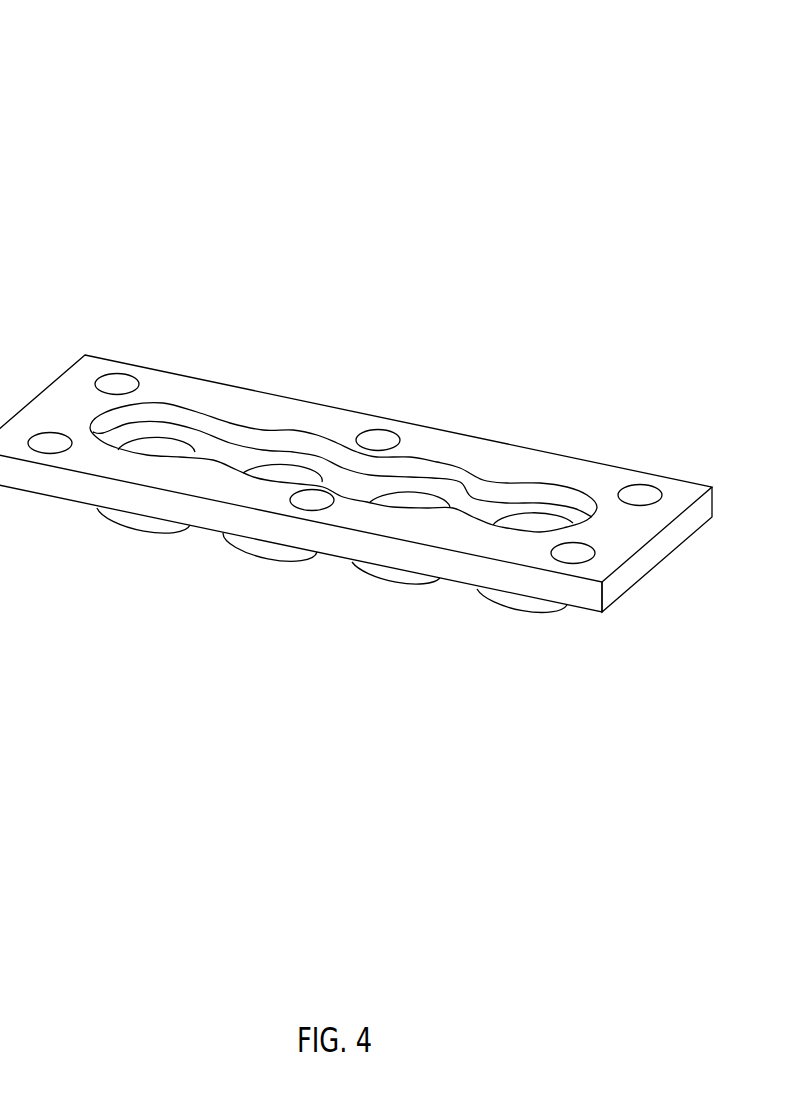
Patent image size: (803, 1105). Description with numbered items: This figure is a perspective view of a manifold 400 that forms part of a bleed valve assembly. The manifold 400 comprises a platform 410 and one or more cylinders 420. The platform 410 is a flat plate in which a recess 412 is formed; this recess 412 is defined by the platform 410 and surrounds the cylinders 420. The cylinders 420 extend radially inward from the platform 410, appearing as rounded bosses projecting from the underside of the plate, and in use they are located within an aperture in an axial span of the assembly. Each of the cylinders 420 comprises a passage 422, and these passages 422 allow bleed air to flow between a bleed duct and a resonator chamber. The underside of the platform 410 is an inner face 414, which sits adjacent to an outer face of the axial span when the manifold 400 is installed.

The manifold 400 is at (215, 118).
The platform 410 is at (487, 457).
The recess 412 is at (232, 422).
The inner face 414 is at (70, 500).
The cylinders 420 is at (480, 600).
The passages 422 is at (536, 513).